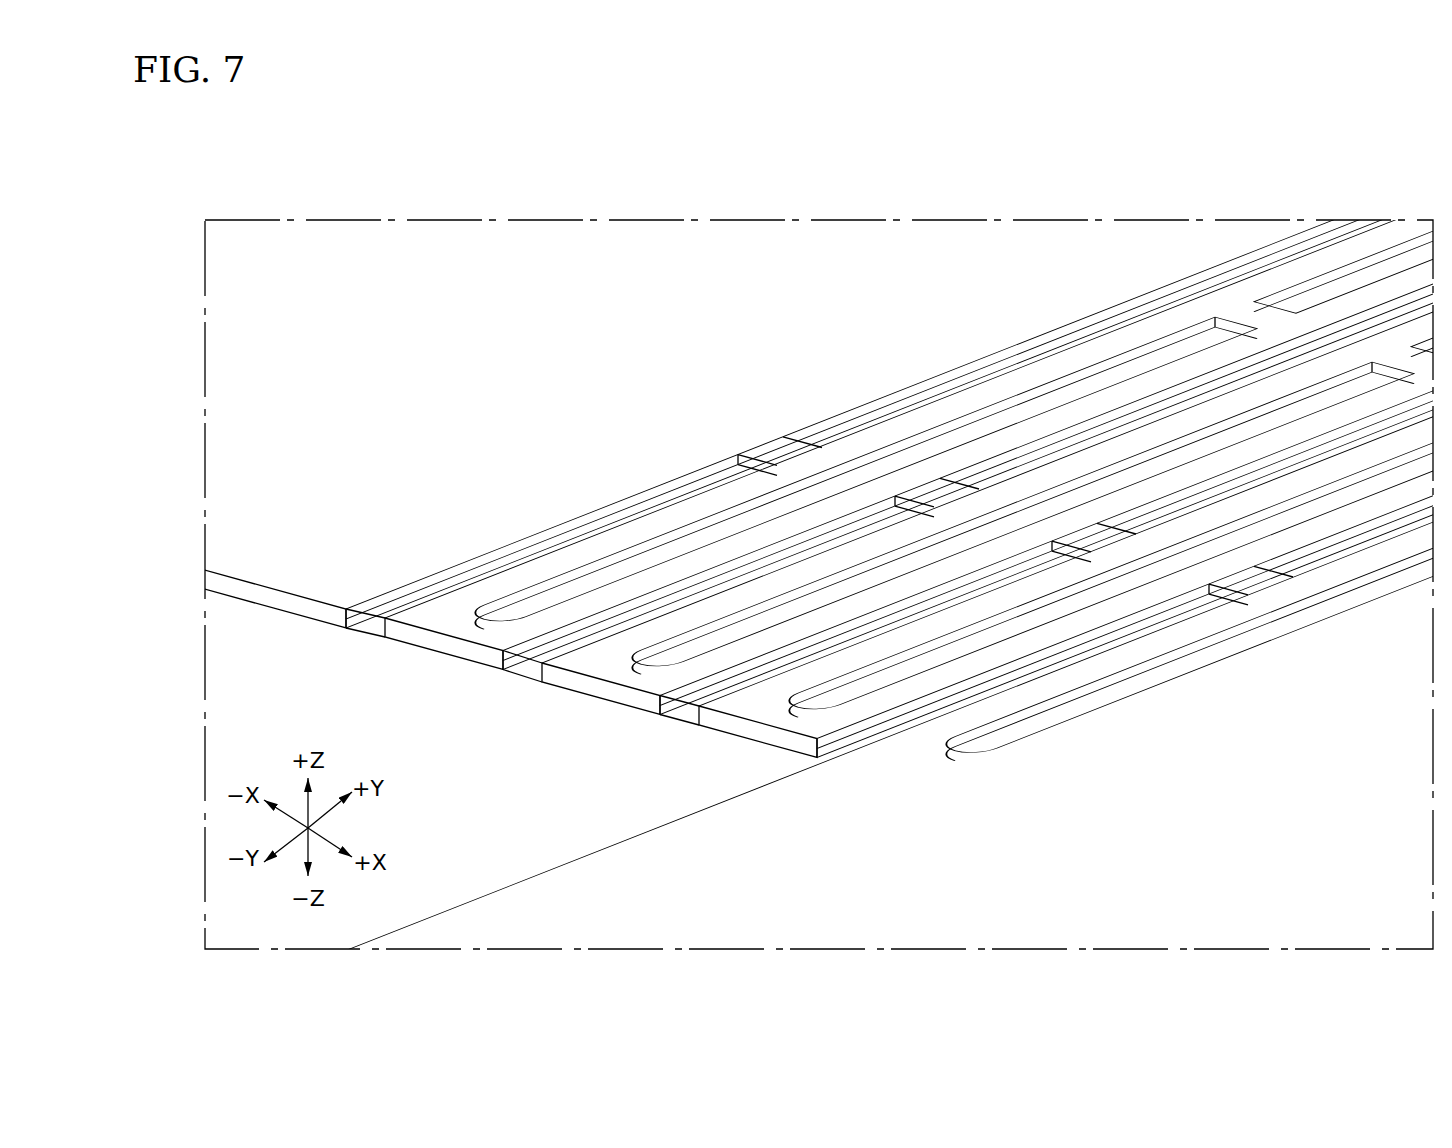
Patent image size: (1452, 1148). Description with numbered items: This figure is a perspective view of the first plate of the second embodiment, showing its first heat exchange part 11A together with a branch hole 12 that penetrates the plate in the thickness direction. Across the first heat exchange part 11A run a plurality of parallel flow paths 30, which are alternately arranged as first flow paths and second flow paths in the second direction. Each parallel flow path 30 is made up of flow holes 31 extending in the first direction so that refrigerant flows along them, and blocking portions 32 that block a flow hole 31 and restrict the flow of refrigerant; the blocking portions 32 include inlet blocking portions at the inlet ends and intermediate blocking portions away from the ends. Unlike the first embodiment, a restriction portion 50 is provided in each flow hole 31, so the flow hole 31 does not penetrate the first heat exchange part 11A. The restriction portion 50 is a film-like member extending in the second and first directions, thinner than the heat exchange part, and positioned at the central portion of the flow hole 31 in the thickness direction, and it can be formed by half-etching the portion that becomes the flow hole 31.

The first heat exchange part 11A is at (193, 360).
The branch hole 12 is at (748, 777).
The parallel flow path 30 is at (408, 657).
The flow hole 31 is at (680, 697).
The blocking portion 32 is at (1259, 572).
The restriction portion 50 is at (736, 683).